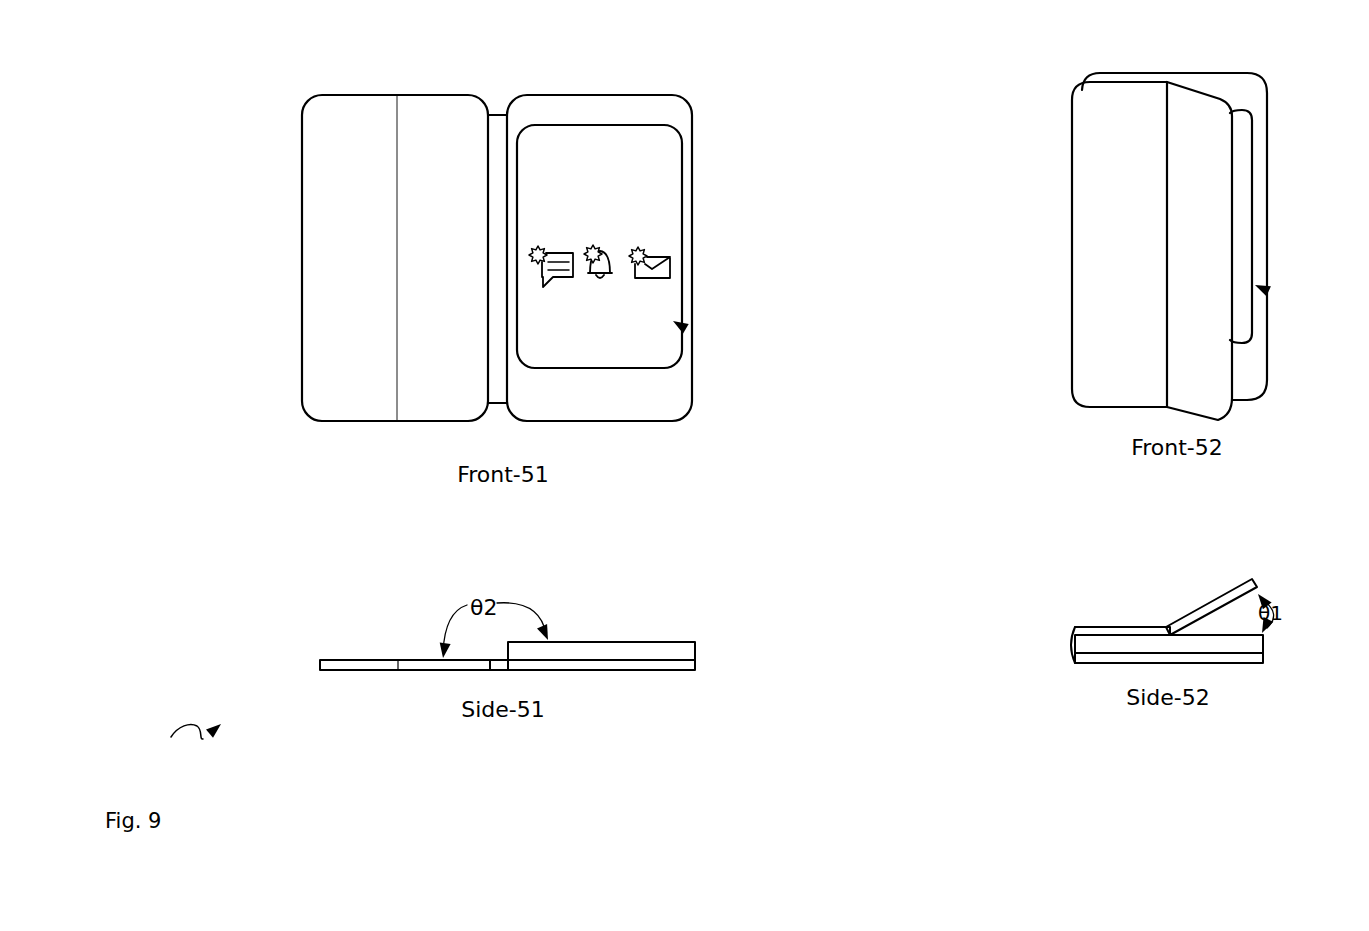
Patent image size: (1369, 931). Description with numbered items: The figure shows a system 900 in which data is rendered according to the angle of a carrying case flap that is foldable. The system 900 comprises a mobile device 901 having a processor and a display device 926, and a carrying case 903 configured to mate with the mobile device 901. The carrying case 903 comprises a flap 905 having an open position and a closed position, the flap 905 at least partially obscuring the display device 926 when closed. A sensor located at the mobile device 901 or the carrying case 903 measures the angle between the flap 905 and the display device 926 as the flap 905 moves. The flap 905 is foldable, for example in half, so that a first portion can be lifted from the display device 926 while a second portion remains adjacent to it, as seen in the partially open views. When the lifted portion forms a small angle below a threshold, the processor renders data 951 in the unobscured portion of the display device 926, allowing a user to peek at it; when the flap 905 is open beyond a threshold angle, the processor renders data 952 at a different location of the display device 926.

The system 900 is at (181, 743).
The mobile device 901 is at (685, 403).
The carrying case 903 is at (440, 103).
The flap 905 is at (1160, 626).
The display device 926 is at (1280, 108).
The data 951 is at (1265, 290).
The data 952 is at (682, 327).